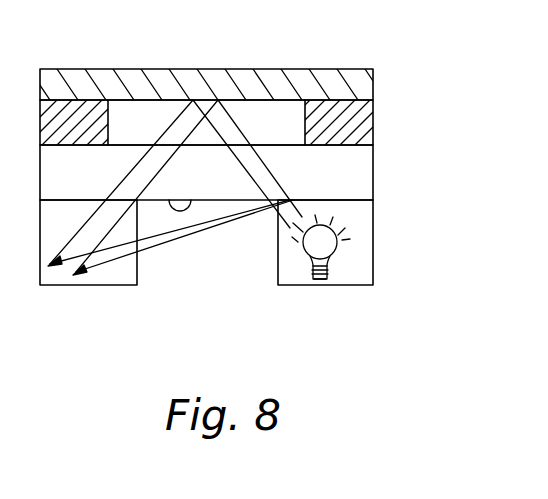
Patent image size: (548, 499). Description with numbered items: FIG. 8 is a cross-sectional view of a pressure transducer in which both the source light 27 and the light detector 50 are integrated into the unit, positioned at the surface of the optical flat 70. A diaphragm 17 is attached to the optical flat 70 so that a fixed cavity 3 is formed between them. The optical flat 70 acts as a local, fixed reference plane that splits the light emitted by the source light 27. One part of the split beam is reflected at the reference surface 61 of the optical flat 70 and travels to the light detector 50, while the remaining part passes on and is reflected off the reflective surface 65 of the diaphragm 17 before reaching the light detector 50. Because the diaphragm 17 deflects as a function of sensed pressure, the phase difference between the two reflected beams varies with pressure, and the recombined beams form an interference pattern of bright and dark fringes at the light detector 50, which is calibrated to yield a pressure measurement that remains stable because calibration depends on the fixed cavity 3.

The diaphragm 17 is at (163, 69).
The cavity 3 is at (147, 130).
The reflective surface 65 is at (249, 104).
The optical flat 70 is at (100, 184).
The reference surface 61 is at (190, 199).
The light detector 50 is at (92, 297).
The source light 27 is at (385, 263).